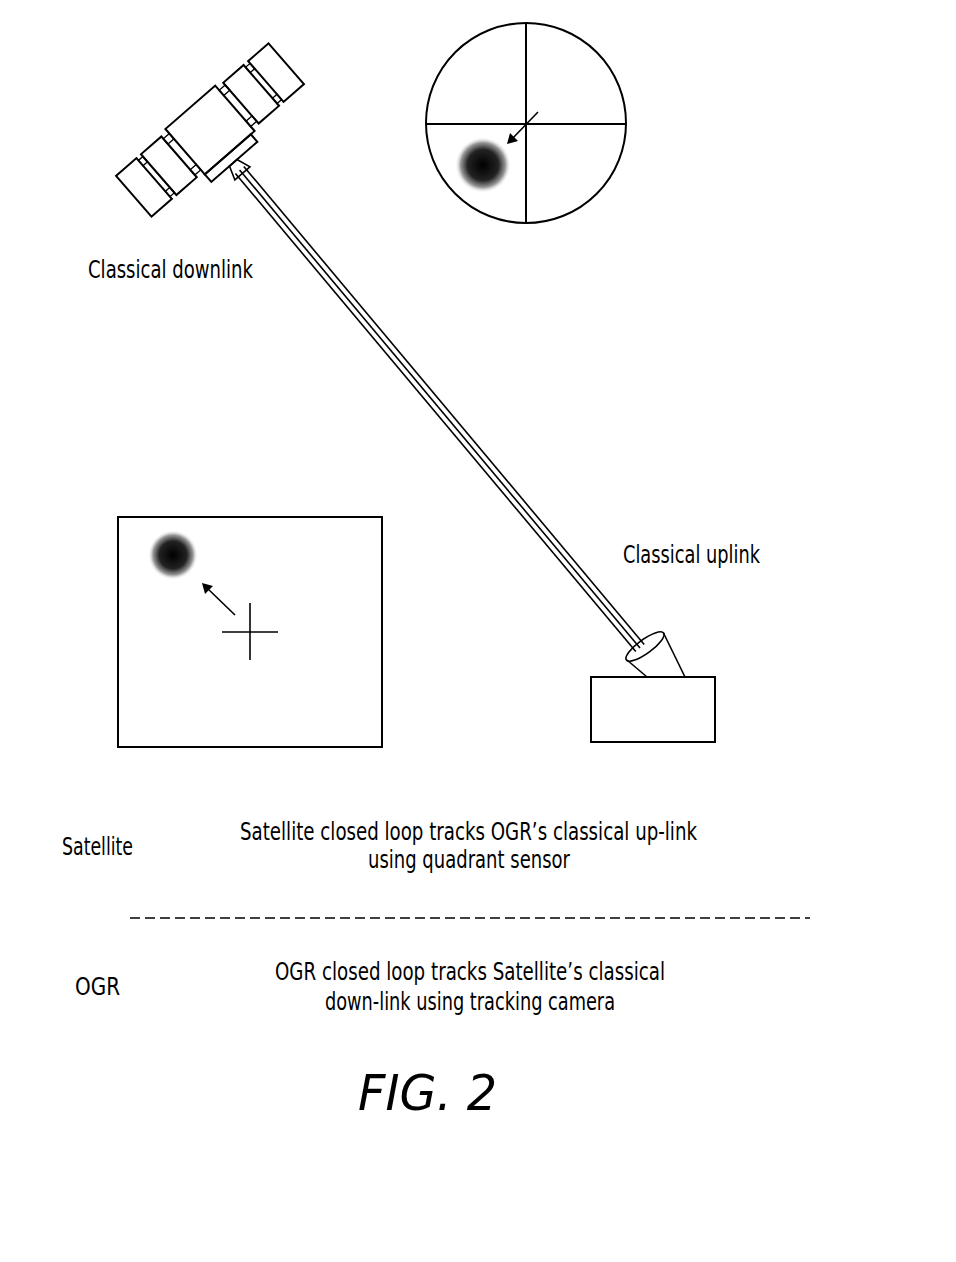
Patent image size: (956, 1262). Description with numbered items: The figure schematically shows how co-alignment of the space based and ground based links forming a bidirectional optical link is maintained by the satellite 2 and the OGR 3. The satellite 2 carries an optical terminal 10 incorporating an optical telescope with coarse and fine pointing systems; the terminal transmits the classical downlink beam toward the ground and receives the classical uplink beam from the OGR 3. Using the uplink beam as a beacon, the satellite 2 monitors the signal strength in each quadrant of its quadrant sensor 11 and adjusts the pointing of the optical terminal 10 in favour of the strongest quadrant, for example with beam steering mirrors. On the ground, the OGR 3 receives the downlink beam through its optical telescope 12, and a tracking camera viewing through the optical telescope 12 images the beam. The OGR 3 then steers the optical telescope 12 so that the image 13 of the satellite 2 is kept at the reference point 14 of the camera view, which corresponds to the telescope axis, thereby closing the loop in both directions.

The satellite 2 is at (186, 121).
The optical terminal 10 is at (246, 163).
The quadrant sensor 11 is at (587, 58).
The optical telescope 12 is at (637, 650).
The OGR 3 is at (716, 689).
The image 13 is at (172, 532).
The reference point 14 is at (252, 630).